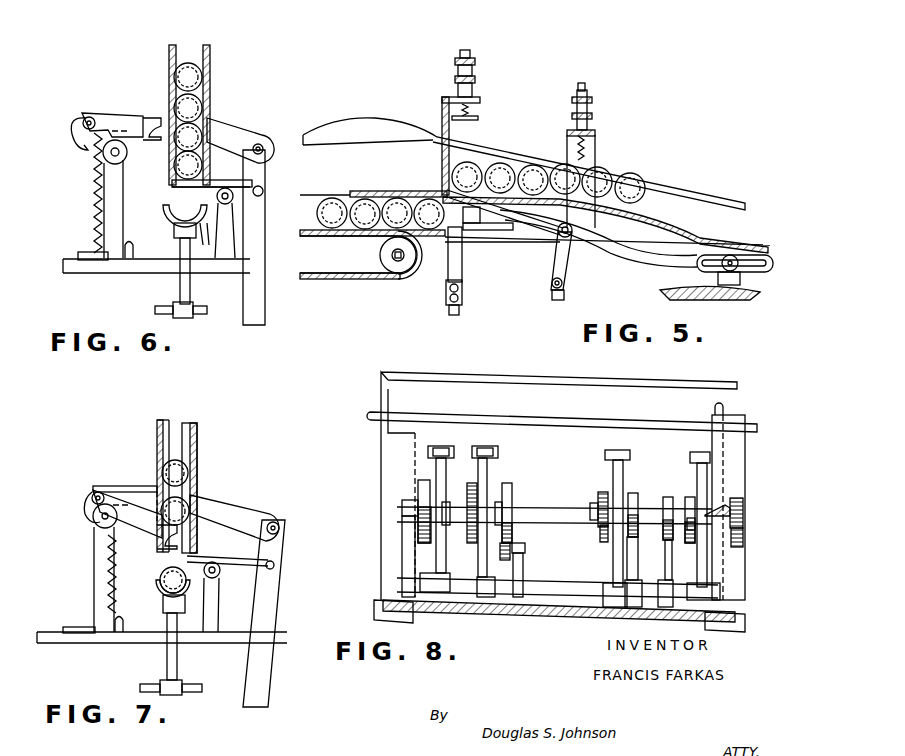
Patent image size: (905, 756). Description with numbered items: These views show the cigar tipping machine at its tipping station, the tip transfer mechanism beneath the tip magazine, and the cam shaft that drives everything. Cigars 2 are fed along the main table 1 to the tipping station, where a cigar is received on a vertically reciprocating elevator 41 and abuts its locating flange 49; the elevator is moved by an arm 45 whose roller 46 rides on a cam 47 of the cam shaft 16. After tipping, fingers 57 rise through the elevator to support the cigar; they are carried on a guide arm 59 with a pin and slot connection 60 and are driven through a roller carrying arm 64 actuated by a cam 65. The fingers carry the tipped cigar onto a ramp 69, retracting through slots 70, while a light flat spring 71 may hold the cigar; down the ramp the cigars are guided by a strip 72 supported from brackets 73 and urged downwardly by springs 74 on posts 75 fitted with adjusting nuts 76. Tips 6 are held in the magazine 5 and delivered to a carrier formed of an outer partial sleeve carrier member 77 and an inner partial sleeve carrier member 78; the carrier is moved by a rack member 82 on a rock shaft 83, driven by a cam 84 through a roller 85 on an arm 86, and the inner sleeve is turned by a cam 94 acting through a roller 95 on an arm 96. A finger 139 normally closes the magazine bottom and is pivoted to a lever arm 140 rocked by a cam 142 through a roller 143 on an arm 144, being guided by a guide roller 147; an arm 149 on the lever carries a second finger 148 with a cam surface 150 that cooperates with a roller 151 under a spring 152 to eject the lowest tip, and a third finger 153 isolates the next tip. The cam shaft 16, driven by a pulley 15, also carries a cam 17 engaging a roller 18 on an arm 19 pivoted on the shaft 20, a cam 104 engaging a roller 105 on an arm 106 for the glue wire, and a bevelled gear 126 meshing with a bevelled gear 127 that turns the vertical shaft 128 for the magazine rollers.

In FIG. 8, the main longitudinal table 1 is at (381, 391).
In FIG. 5, the cigars 2 is at (385, 198).
In FIG. 6, the magazine 5 is at (211, 62).
In FIG. 7, the magazine 5 is at (198, 450).
In FIG. 6, the tips 6 is at (204, 110).
In FIG. 7, the tips 6 is at (193, 502).
In FIG. 8, the pulley 15 is at (743, 545).
In FIG. 8, the cam shaft 16 is at (537, 512).
In FIG. 8, the cam 17 is at (418, 487).
In FIG. 8, the roller 18 is at (402, 511).
In FIG. 8, the arm 19 is at (433, 553).
In FIG. 8, the shaft 20 is at (548, 582).
In FIG. 5, the elevator 41 is at (463, 268).
In FIG. 8, the arm 45 is at (520, 580).
In FIG. 8, the roller 46 is at (511, 548).
In FIG. 8, the cam 47 is at (513, 498).
In FIG. 5, the locating flange 49 is at (477, 215).
In FIG. 5, the fingers 57 is at (522, 222).
In FIG. 5, the guide arm 59 is at (658, 250).
In FIG. 5, the pin and slot connection 60 is at (740, 256).
In FIG. 8, the roller carrying arm 64 is at (483, 553).
In FIG. 8, the cam 65 is at (480, 495).
In FIG. 5, the ramp 69 is at (660, 222).
In FIG. 5, the slots 70 is at (500, 190).
In FIG. 5, the flat spring 71 is at (463, 147).
In FIG. 5, the strip 72 is at (675, 181).
In FIG. 5, the brackets 73 is at (598, 133).
In FIG. 5, the springs 74 is at (596, 153).
In FIG. 5, the posts 75 is at (586, 94).
In FIG. 5, the adjusting nuts 76 is at (594, 100).
In FIG. 6, the outer partial sleeve carrier member 77 is at (204, 242).
In FIG. 6, the inner partial sleeve carrier member 78 is at (177, 225).
In FIG. 7, the inner partial sleeve carrier member 78 is at (163, 604).
In FIG. 6, the rack member 82 is at (191, 292).
In FIG. 7, the rack member 82 is at (178, 664).
In FIG. 6, the rock shaft 83 is at (200, 318).
In FIG. 7, the rock shaft 83 is at (197, 692).
In FIG. 8, the cam 84 is at (639, 502).
In FIG. 8, the roller 85 is at (610, 585).
In FIG. 8, the arm 86 is at (640, 583).
In FIG. 8, the cam 94 is at (695, 502).
In FIG. 8, the roller 95 is at (693, 522).
In FIG. 8, the arm 96 is at (702, 555).
In FIG. 8, the cam 104 is at (671, 500).
In FIG. 8, the roller 105 is at (665, 585).
In FIG. 8, the arm 106 is at (690, 590).
In FIG. 8, the bevelled gear 126 is at (743, 520).
In FIG. 8, the bevelled gear 127 is at (731, 511).
In FIG. 8, the vertical shaft 128 is at (726, 420).
In FIG. 6, the finger 139 is at (183, 185).
In FIG. 7, the finger 139 is at (215, 557).
In FIG. 6, the lever arm 140 is at (268, 252).
In FIG. 7, the lever arm 140 is at (278, 605).
In FIG. 8, the cam 142 is at (603, 497).
In FIG. 8, the roller 143 is at (606, 535).
In FIG. 8, the arm 144 is at (620, 480).
In FIG. 6, the guide roller 147 is at (259, 189).
In FIG. 7, the guide roller 147 is at (216, 583).
In FIG. 6, the second finger 148 is at (106, 118).
In FIG. 7, the second finger 148 is at (130, 508).
In FIG. 6, the arm 149 is at (241, 136).
In FIG. 7, the arm 149 is at (243, 510).
In FIG. 6, the cam surface 150 is at (88, 152).
In FIG. 7, the cam surface 150 is at (88, 511).
In FIG. 6, the roller 151 is at (98, 172).
In FIG. 7, the roller 151 is at (100, 528).
In FIG. 6, the spring 152 is at (104, 223).
In FIG. 7, the spring 152 is at (113, 602).
In FIG. 6, the third finger 153 is at (148, 122).
In FIG. 7, the third finger 153 is at (153, 500).